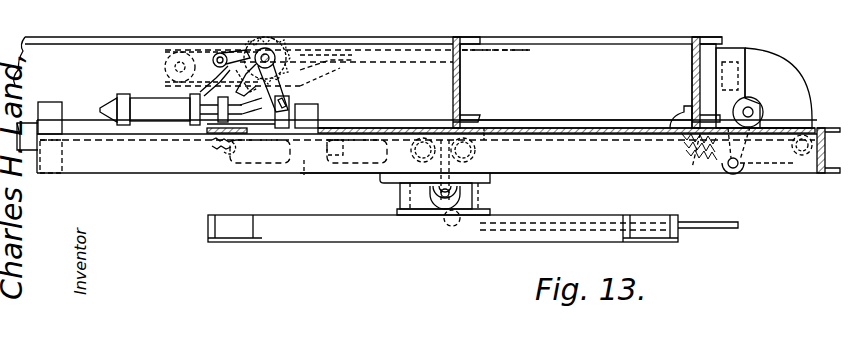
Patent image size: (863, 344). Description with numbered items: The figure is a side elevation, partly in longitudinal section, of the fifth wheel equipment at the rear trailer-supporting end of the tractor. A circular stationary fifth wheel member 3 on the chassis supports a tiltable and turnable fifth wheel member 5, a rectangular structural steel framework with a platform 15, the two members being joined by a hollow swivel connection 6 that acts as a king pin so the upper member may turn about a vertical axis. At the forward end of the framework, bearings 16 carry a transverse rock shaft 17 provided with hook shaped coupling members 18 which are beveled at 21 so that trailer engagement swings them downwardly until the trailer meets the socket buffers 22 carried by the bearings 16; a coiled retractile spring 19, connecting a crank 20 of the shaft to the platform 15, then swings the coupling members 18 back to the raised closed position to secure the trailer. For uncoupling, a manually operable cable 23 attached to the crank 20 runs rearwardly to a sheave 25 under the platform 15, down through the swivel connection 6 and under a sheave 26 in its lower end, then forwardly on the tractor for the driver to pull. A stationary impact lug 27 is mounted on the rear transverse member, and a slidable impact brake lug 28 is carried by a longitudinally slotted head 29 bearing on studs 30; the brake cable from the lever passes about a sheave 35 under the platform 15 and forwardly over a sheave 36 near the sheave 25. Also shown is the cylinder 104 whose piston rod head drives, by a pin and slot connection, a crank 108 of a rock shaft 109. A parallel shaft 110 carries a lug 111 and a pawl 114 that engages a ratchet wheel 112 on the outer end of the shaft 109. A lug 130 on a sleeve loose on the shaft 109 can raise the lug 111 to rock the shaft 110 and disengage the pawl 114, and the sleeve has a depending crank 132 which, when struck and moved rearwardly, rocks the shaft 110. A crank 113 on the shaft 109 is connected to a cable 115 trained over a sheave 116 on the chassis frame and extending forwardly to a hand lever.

The circular stationary fifth wheel member 3 is at (650, 244).
The tiltable and turnable fifth wheel member 5 is at (578, 176).
The hollow swivel connection 6 is at (480, 192).
The platform 15 is at (576, 82).
The bearings 16 is at (804, 92).
The rock shaft 17 is at (756, 108).
The coupling members 18 is at (716, 96).
The coiled retractile spring 19 is at (692, 168).
The crank 20 is at (734, 172).
The bevel 21 is at (676, 112).
The socket buffers 22 is at (734, 47).
The manually operable cable 23 is at (788, 170).
The sheave 25 is at (484, 128).
The sheave 26 is at (448, 222).
The stationary impact lug 27 is at (55, 120).
The slidable impact brake lug 28 is at (308, 104).
The slotted head 29 is at (304, 175).
The studs 30 is at (346, 126).
The sheave 35 is at (212, 146).
The sheave 36 is at (434, 124).
The cylinder 104 is at (140, 96).
The crank 108 is at (256, 112).
The rock shaft 109 is at (282, 70).
The shaft 110 is at (214, 56).
The lug 111 is at (222, 52).
The ratchet wheel 112 is at (352, 55).
The crank 113 is at (340, 68).
The pawl 114 is at (256, 34).
The cable 115 is at (496, 48).
The sheave 116 is at (172, 53).
The lug 130 is at (272, 48).
The depending crank 132 is at (246, 78).